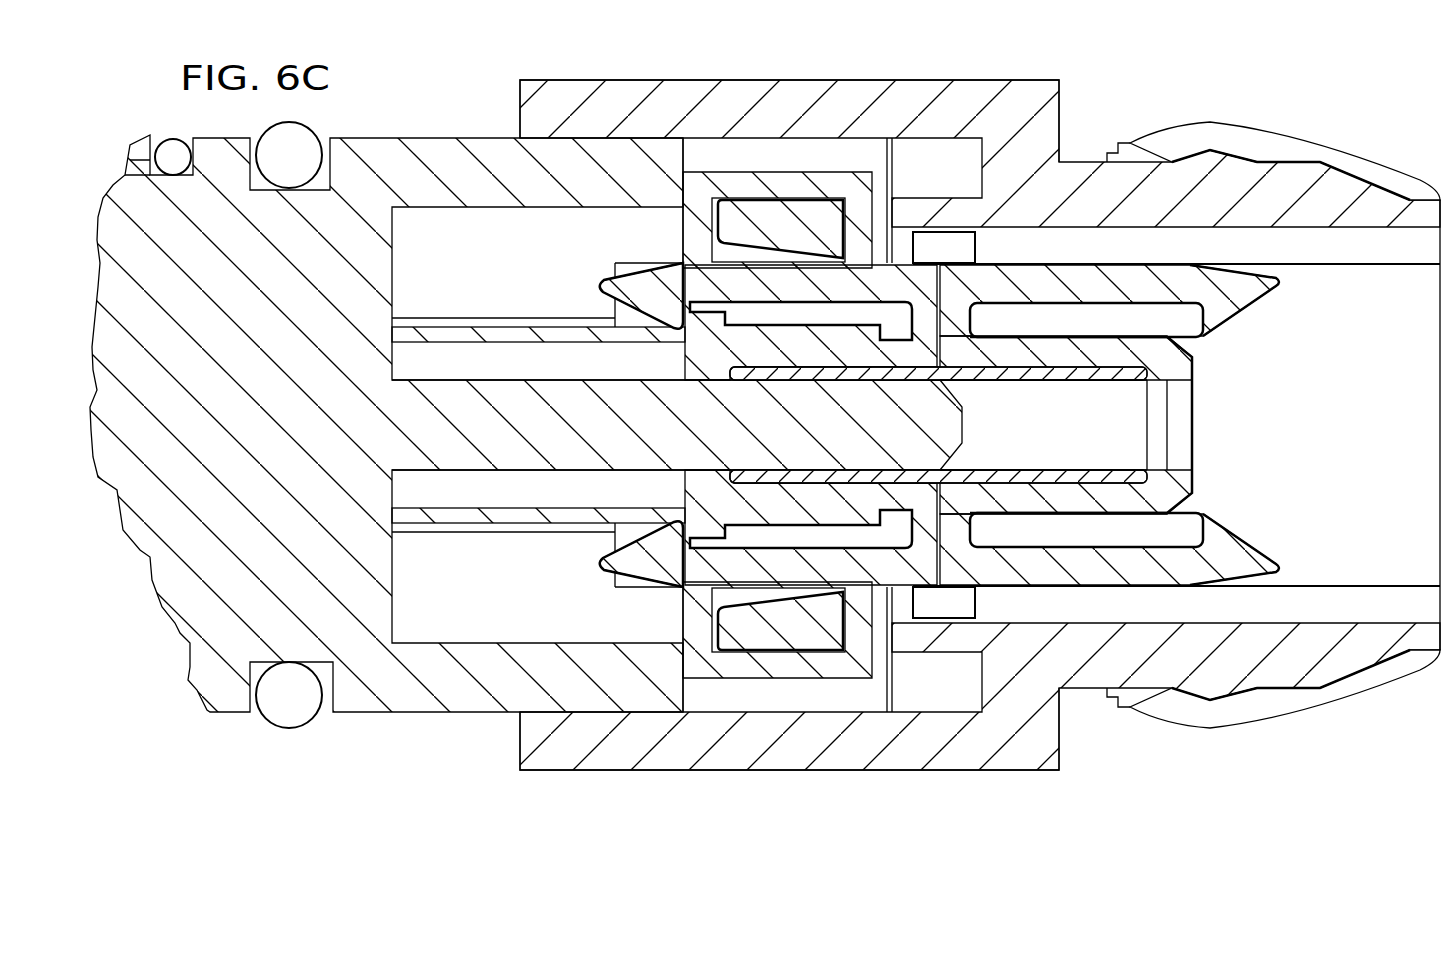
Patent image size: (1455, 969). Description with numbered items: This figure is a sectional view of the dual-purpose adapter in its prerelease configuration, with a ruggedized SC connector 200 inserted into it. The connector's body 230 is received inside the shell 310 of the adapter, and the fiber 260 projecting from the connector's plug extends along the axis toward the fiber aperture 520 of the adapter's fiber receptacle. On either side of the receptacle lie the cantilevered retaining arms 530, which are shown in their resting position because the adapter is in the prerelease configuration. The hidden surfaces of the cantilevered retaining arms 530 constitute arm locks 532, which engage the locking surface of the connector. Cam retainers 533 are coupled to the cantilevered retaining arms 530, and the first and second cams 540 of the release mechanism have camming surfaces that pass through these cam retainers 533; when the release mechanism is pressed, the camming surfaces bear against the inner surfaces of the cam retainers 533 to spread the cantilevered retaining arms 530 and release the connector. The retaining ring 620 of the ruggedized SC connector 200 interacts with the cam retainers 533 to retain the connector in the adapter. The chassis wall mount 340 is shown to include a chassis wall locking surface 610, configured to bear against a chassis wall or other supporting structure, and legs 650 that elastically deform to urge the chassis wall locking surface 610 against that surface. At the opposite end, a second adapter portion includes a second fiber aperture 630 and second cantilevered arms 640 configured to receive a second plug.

The ruggedized SC connector 200 is at (178, 625).
The body 230 is at (497, 140).
The fiber 260 is at (670, 441).
The shell 310 is at (808, 80).
The chassis wall mount 340 is at (1376, 66).
The fiber aperture 520 is at (1082, 441).
The cantilevered retaining arms 530 is at (690, 240).
The arm locks 532 is at (628, 300).
The cam retainers 533 is at (718, 177).
The first and second cams 540 is at (780, 212).
The chassis wall locking surface 610 is at (1059, 121).
The retaining ring 620 is at (700, 318).
The second fiber aperture 630 is at (1192, 427).
The second cantilevered arms 640 is at (1243, 298).
The legs 650 is at (1270, 132).